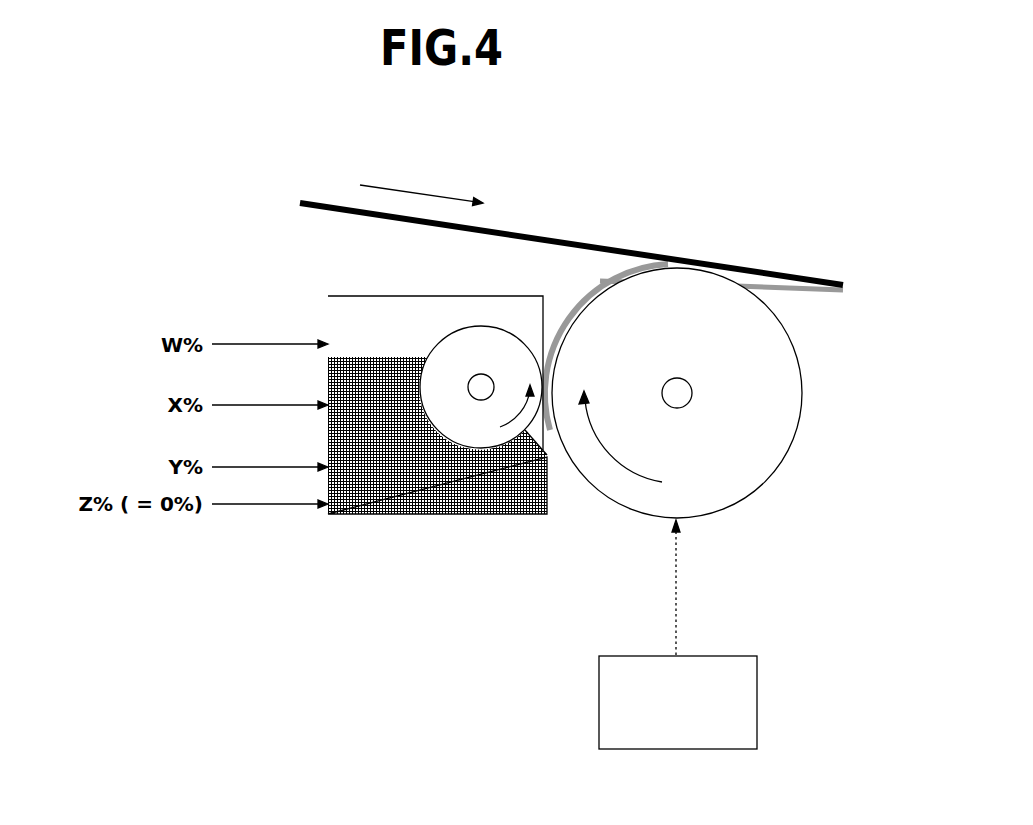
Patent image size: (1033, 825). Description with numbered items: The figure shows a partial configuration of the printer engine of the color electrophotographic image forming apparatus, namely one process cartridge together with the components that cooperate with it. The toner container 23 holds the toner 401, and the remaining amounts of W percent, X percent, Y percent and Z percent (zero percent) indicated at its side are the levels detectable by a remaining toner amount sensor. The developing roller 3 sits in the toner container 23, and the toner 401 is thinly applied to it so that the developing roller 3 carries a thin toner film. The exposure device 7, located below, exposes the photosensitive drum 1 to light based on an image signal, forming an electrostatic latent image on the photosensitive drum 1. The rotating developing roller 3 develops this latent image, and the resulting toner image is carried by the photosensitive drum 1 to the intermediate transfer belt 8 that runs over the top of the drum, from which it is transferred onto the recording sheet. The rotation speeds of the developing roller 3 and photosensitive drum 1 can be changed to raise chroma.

The intermediate transfer belt 8 is at (597, 243).
The toner container 23 is at (360, 296).
The toner 401 is at (436, 517).
The developing roller 3 is at (465, 325).
The photosensitive drum 1 is at (803, 373).
The exposure device 7 is at (724, 655).